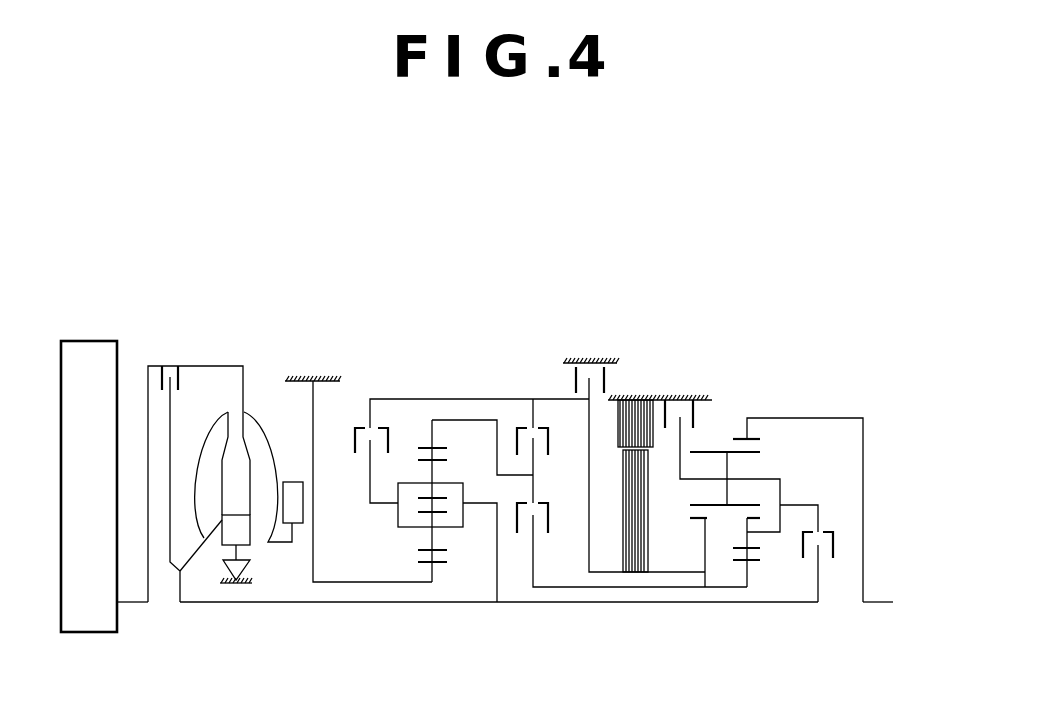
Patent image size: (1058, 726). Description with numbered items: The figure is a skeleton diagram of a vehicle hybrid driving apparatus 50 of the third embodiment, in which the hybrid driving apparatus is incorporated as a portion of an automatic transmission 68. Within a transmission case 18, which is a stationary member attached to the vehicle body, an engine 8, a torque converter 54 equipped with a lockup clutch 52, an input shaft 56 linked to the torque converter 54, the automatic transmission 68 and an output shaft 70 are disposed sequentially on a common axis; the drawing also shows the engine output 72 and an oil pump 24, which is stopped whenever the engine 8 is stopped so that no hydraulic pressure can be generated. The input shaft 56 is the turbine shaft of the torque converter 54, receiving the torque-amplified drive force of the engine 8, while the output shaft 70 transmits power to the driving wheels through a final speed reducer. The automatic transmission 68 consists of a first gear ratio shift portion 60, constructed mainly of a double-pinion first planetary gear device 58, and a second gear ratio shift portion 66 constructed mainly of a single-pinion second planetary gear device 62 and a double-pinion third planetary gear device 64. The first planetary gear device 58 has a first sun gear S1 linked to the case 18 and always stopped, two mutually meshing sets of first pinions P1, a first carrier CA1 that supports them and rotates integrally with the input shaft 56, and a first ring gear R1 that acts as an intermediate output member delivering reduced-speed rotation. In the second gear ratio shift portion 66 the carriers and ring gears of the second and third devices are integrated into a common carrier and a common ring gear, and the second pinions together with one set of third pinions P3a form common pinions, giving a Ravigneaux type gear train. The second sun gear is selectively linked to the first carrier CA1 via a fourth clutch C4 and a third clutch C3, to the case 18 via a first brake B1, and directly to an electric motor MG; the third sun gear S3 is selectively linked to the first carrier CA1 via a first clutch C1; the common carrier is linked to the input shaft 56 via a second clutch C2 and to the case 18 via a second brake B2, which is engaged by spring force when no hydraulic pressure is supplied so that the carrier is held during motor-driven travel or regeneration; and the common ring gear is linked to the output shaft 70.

The engine 8 is at (78, 355).
The crankshaft 72 is at (137, 605).
The lockup clutch 52 is at (178, 378).
The torque converter 54 is at (228, 447).
The oil pump 24 is at (289, 487).
The transmission case 18 is at (313, 380).
The input shaft 56 is at (202, 605).
The first planetary gear device 58 is at (432, 611).
The vehicle hybrid driving apparatus 50 is at (532, 299).
The first gear ratio shift portion 60 is at (530, 462).
The automatic transmission 68 is at (614, 457).
The second planetary gear device 62 is at (621, 614).
The second gear ratio shift portion 66 is at (800, 492).
The third planetary gear device 64 is at (760, 595).
The output shaft 70 is at (878, 605).
The electric motor MG is at (617, 458).
The first clutch C1 is at (632, 545).
The second clutch C2 is at (832, 567).
The third clutch C3 is at (550, 451).
The fourth clutch C4 is at (359, 465).
The first brake B1 is at (623, 469).
The second brake B2 is at (741, 466).
The first ring gear R1 is at (432, 447).
The first carrier CA1 is at (371, 504).
The first pinions P1 is at (428, 541).
The first sun gear S1 is at (446, 563).
The third sun gear S3 is at (734, 552).
The third pinions P3a is at (772, 574).